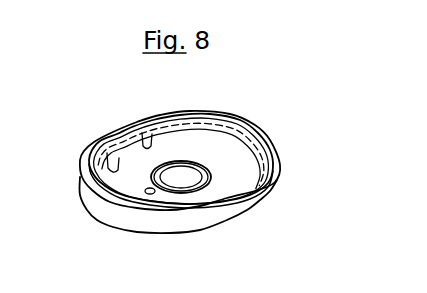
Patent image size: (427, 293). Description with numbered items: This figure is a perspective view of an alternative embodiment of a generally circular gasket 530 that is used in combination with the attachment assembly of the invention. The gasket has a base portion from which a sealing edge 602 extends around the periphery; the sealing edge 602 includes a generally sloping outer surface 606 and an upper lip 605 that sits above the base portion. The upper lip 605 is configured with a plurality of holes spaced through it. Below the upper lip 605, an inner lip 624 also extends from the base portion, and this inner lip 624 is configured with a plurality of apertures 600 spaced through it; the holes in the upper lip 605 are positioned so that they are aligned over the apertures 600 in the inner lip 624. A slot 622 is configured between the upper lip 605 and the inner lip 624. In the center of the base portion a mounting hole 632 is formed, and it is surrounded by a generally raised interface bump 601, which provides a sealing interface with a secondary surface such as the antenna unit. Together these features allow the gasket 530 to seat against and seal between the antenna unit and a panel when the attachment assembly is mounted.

The cap assembly 530 is at (213, 182).
The apertures 600 is at (181, 134).
The interface bump 601 is at (208, 183).
The sealing edge 602 is at (195, 179).
The upper lip 605 is at (218, 161).
The outer surface 606 is at (217, 163).
The slot 622 is at (133, 136).
The inner lip 624 is at (96, 167).
The mounting hole 632 is at (196, 226).